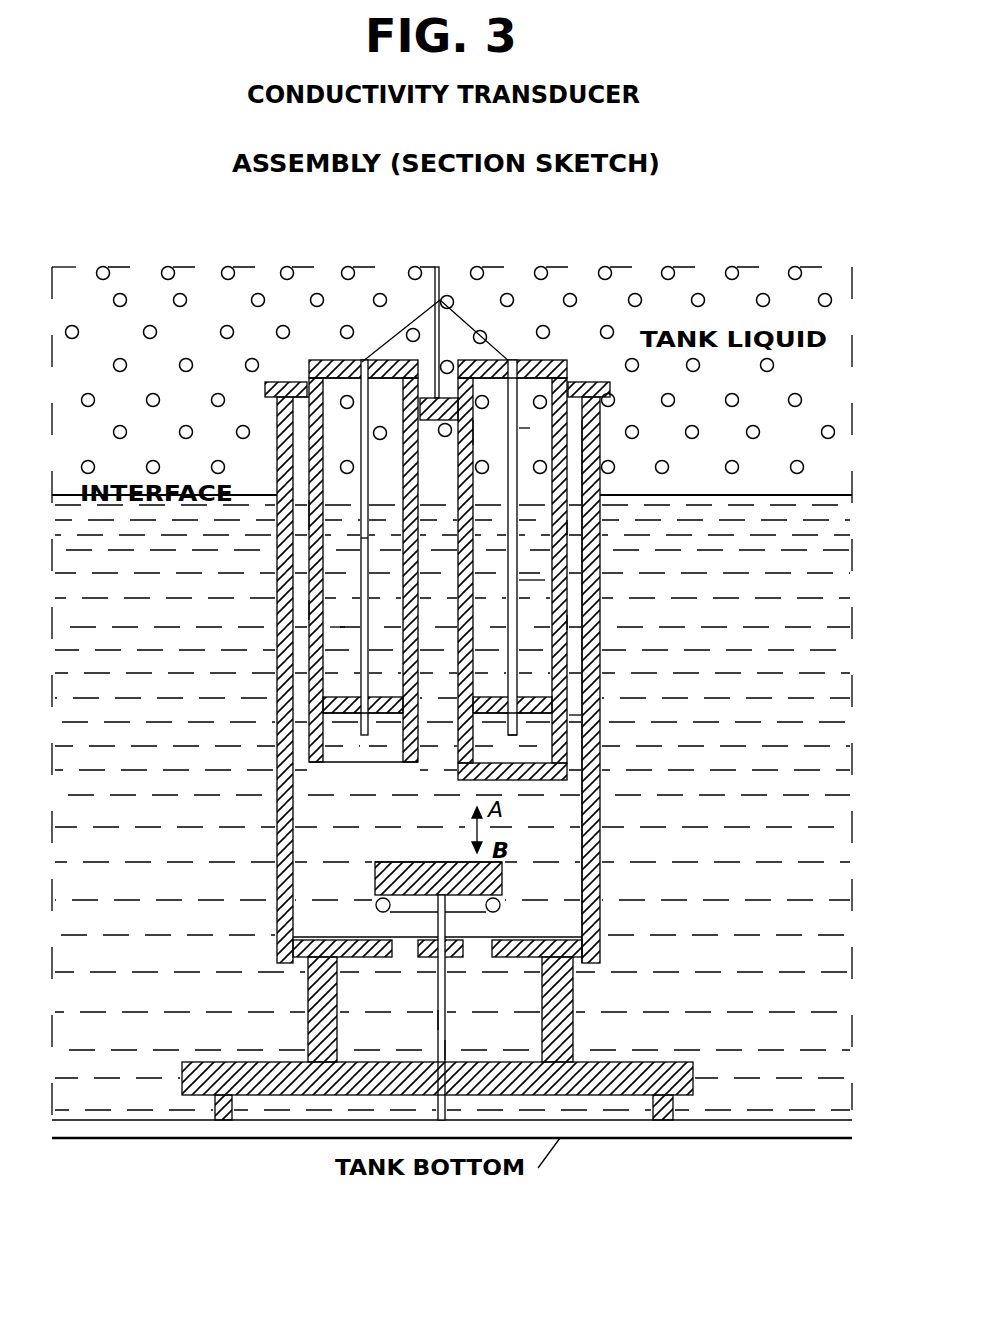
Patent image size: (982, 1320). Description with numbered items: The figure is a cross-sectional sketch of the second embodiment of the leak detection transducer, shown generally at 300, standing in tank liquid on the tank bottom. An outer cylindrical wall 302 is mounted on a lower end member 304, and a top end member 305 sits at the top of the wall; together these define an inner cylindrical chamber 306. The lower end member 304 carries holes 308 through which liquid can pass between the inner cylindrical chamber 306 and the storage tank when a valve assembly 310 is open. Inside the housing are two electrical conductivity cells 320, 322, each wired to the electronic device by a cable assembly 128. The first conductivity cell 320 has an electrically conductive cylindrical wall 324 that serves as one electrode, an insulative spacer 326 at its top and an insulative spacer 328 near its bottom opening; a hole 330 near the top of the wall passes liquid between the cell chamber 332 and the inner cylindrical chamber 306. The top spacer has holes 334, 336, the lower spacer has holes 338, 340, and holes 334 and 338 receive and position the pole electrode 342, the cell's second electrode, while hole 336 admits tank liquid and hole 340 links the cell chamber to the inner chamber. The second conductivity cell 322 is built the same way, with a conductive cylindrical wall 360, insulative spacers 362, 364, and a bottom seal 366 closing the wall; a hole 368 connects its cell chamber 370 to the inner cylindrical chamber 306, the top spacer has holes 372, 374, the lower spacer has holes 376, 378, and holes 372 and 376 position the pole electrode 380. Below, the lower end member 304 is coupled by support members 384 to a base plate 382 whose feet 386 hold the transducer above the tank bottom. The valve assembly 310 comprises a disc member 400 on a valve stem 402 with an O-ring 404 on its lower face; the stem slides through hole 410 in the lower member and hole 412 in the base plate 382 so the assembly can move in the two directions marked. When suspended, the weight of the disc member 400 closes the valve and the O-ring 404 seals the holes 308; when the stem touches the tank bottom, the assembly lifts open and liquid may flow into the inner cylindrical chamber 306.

The transducer 300 is at (70, 228).
The outer cylindrical wall 302 is at (278, 585).
The lower end member 304 is at (560, 933).
The top end member 305 is at (277, 382).
The inner cylindrical chamber 306 is at (573, 722).
The holes 308 is at (487, 935).
The valve assembly 310 is at (375, 870).
The conductivity cell 320 is at (313, 513).
The conductivity cell 322 is at (568, 525).
The cylindrical wall 324 is at (310, 608).
The insulative spacer 326 is at (333, 358).
The insulative spacer 328 is at (378, 713).
The hole 330 is at (312, 430).
The cell chamber 332 is at (338, 627).
The hole 334 is at (361, 360).
The hole 336 is at (390, 362).
The hole 338 is at (327, 707).
The hole 340 is at (387, 700).
The pole electrode 342 is at (360, 538).
The cable assembly 128 is at (440, 300).
The cylindrical wall 360 is at (567, 623).
The insulative spacer 362 is at (488, 362).
The insulative spacer 364 is at (522, 697).
The bottom seal 366 is at (528, 780).
The hole 368 is at (473, 432).
The cell chamber 370 is at (543, 580).
The hole 372 is at (507, 362).
The hole 374 is at (518, 392).
The hole 376 is at (504, 720).
The hole 378 is at (535, 717).
The pole electrode 380 is at (520, 428).
The base plate 382 is at (668, 1062).
The support members 384 is at (308, 1003).
The feet 386 is at (215, 1105).
The disc member 400 is at (502, 878).
The valve stem 402 is at (446, 1020).
The O-ring 404 is at (375, 905).
The hole 410 is at (447, 963).
The hole 412 is at (446, 1052).